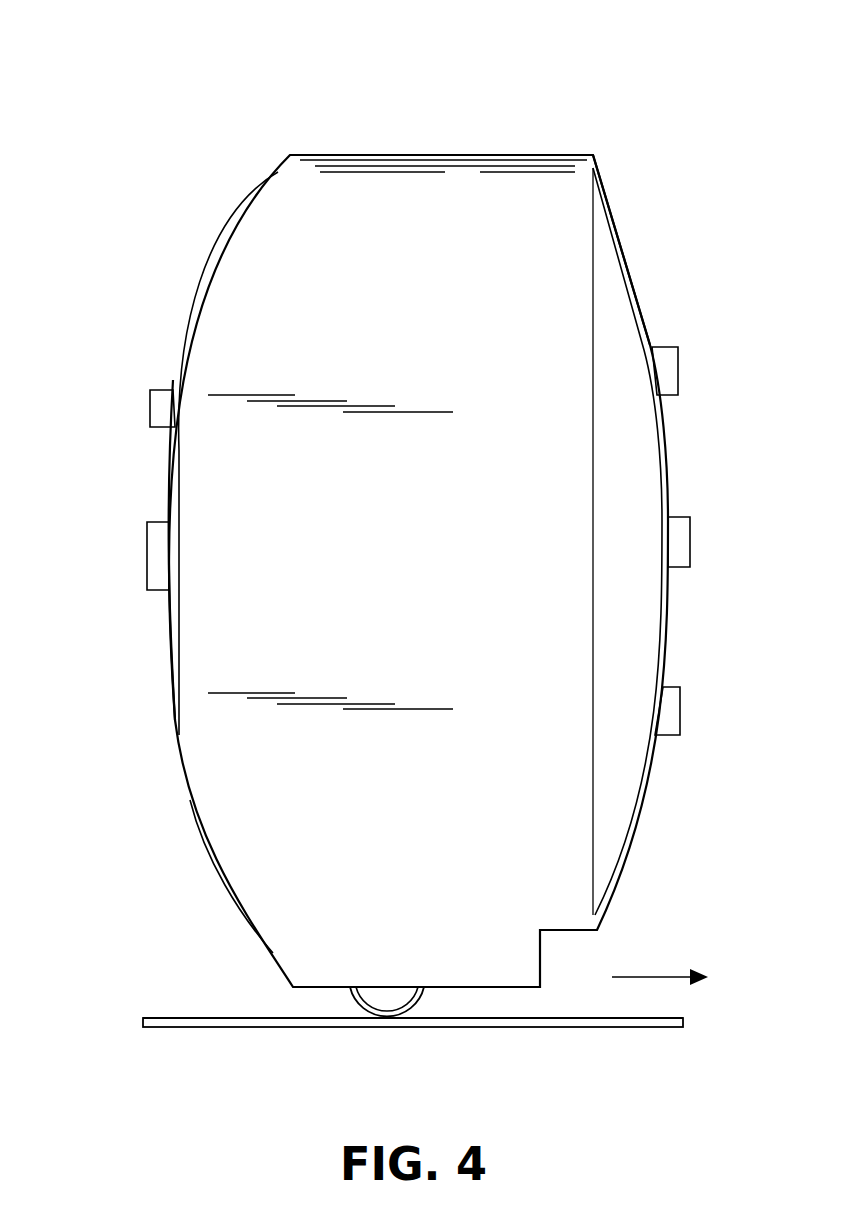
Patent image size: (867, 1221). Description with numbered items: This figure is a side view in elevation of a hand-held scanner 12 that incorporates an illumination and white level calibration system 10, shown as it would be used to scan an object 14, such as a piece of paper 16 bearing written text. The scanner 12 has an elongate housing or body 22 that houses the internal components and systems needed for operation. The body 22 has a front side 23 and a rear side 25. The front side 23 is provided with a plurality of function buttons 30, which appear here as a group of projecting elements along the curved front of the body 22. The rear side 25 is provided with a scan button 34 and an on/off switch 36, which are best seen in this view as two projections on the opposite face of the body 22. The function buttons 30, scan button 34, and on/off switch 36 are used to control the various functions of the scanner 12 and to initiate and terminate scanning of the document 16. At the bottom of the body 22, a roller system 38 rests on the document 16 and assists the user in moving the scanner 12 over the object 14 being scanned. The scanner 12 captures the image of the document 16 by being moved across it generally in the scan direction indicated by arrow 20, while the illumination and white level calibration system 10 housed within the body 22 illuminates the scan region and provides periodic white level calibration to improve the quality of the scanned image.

The illumination and white level calibration system 10 is at (162, 84).
The hand-held scanner 12 is at (222, 207).
The object 14 is at (178, 1038).
The piece of paper 16 is at (161, 1017).
The arrow 20 is at (662, 972).
The elongate housing or body 22 is at (443, 153).
The front side 23 is at (633, 264).
The rear side 25 is at (171, 681).
The function buttons 30 is at (678, 370).
The scan button 34 is at (147, 553).
The on/off switch 36 is at (150, 406).
The roller system 38 is at (338, 1002).